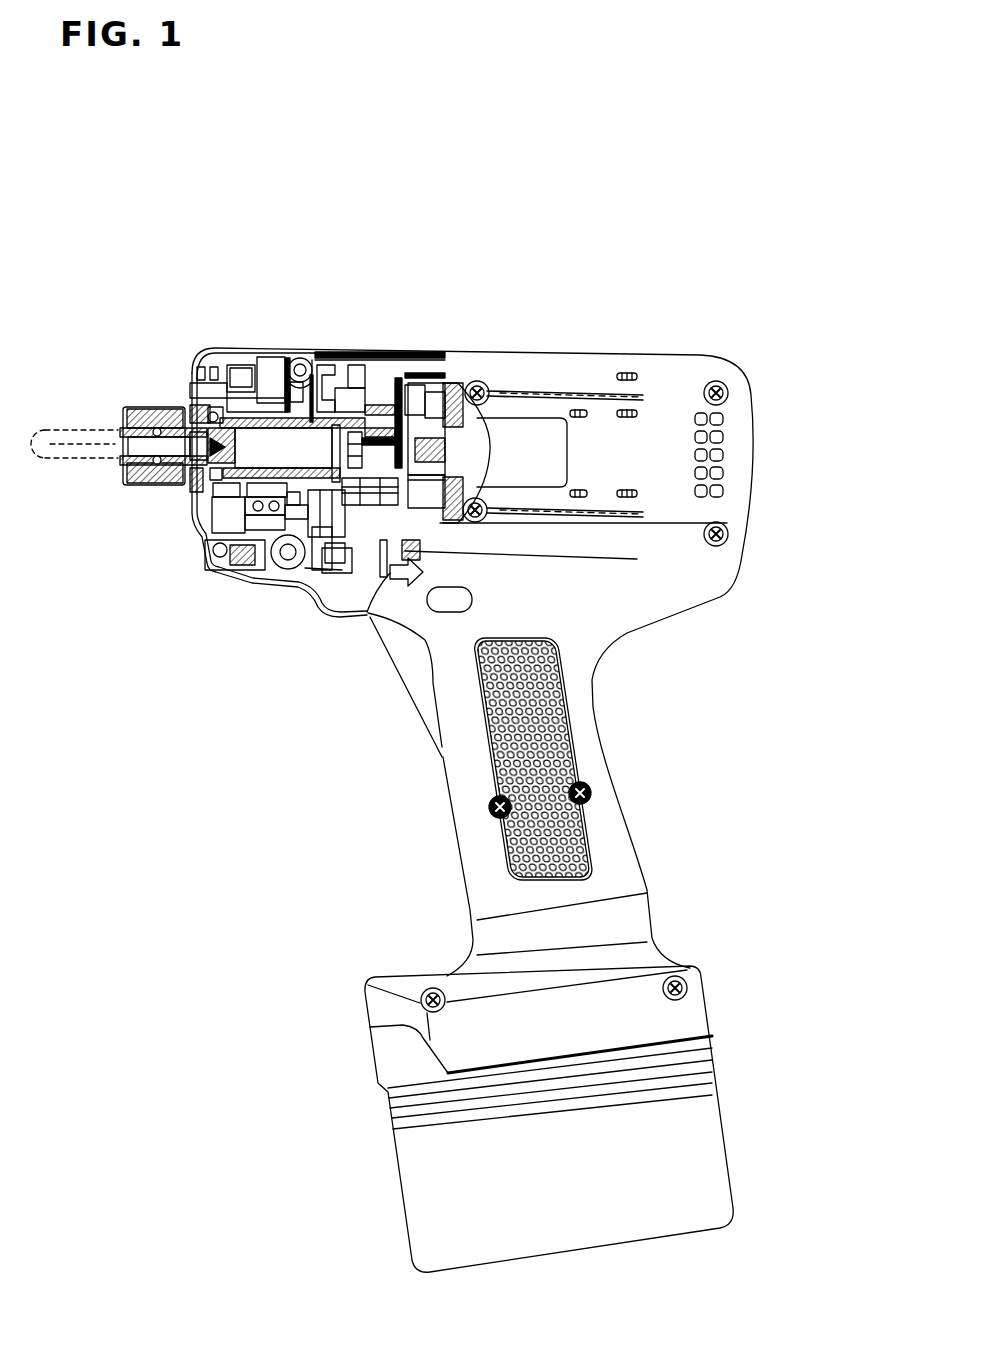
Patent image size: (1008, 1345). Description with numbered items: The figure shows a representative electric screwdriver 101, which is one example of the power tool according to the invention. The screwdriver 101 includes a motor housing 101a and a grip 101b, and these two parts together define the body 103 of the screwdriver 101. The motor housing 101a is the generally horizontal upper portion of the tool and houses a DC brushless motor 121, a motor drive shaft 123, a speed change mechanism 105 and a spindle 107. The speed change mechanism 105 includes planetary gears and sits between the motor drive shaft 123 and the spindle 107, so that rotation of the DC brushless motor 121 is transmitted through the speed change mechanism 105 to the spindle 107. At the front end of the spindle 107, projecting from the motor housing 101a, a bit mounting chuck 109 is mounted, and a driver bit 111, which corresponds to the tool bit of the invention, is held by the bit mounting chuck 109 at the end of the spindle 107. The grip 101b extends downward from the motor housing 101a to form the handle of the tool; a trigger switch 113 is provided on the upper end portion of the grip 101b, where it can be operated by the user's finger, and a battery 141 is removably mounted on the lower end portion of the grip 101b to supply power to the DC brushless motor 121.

The electric screwdriver 101 is at (697, 295).
The motor housing 101a is at (682, 377).
The grip 101b is at (593, 737).
The body 103 is at (366, 405).
The speed change mechanism 105 is at (388, 380).
The spindle 107 is at (301, 390).
The bit mounting chuck 109 is at (157, 407).
The driver bit 111 is at (82, 458).
The trigger switch 113 is at (407, 665).
The DC brushless motor 121 is at (507, 442).
The motor drive shaft 123 is at (466, 436).
The battery 141 is at (710, 1168).